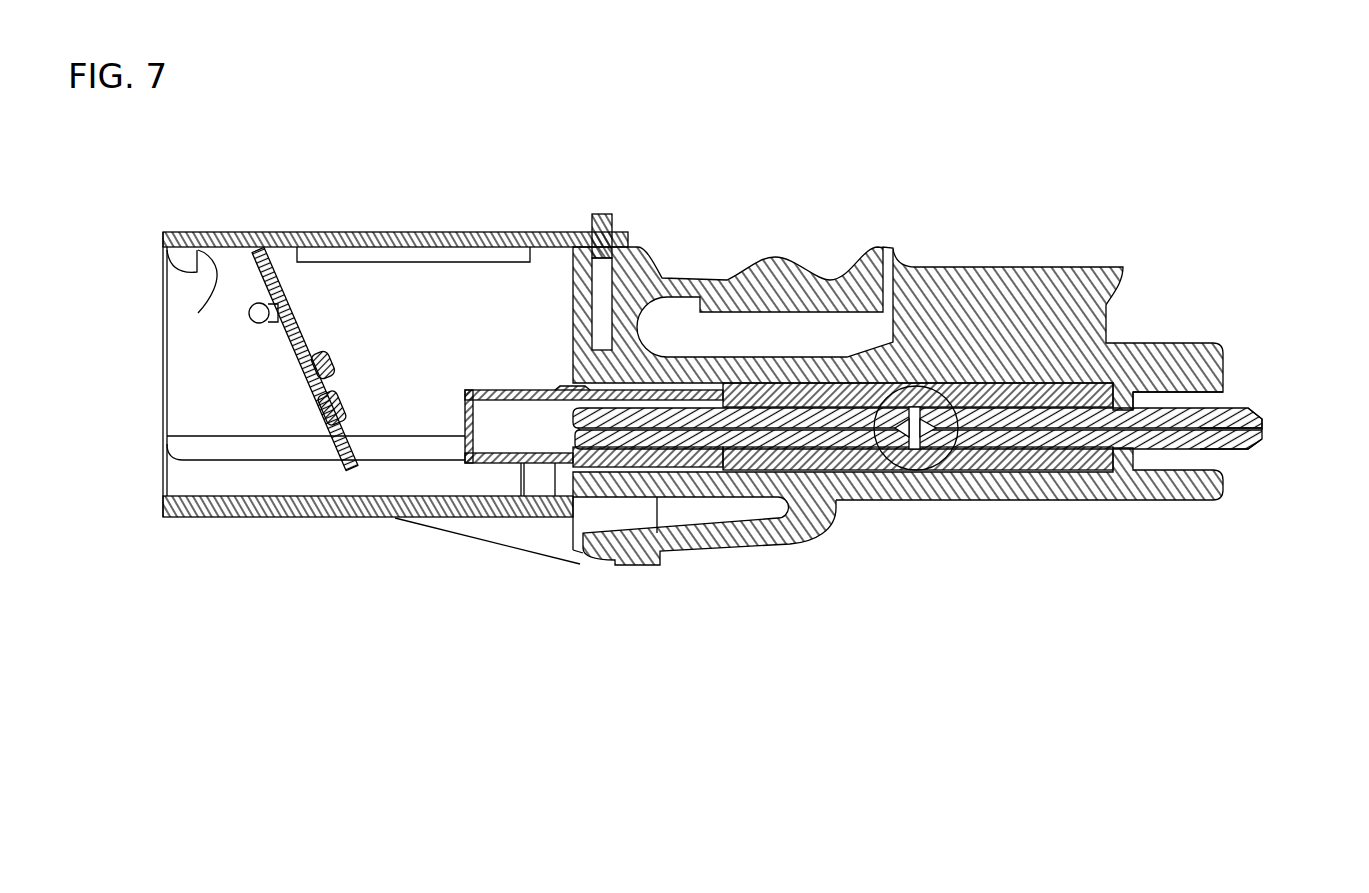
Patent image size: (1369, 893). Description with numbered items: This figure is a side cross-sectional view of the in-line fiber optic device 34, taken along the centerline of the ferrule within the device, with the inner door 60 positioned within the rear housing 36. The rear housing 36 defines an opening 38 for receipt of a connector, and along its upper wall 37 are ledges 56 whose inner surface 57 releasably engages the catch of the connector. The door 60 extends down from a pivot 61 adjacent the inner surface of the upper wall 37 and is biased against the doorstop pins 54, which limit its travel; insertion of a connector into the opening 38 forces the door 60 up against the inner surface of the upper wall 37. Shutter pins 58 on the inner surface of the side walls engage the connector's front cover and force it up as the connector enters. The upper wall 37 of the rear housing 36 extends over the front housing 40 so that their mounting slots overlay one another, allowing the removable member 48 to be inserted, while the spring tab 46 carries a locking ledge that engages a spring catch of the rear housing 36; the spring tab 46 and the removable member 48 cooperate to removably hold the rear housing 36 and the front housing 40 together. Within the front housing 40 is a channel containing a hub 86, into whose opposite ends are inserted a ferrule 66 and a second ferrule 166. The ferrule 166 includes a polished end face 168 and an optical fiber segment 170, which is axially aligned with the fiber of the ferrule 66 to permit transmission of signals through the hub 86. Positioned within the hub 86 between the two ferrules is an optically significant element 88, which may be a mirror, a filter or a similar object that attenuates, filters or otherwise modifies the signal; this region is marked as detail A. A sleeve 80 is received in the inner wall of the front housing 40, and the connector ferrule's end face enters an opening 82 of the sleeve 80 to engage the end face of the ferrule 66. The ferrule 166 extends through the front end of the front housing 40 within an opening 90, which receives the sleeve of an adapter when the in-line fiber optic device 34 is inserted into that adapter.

The in-line fiber optic device 34 is at (903, 125).
The rear housing 36 is at (377, 197).
The upper wall 37 is at (313, 234).
The opening 38 is at (182, 365).
The front housing 40 is at (1060, 258).
The spring tab 46 is at (716, 543).
The removable member 48 is at (604, 221).
The doorstop pins 54 is at (262, 328).
The ledges 56 is at (183, 254).
The inner surface 57 is at (195, 295).
The shutter pins 58 is at (321, 356).
The inner door 60 is at (323, 410).
The pivot 61 is at (257, 252).
The ferrule 66 is at (587, 438).
The sleeve 80 is at (583, 393).
The opening 82 is at (482, 426).
The hub 86 is at (990, 473).
The optically significant element 88 is at (917, 458).
The opening 90 is at (1215, 398).
The ferrule 166 is at (1248, 441).
The polished end face 168 is at (1258, 420).
The optical fiber segment 170 is at (1262, 434).
The detail region A is at (898, 467).